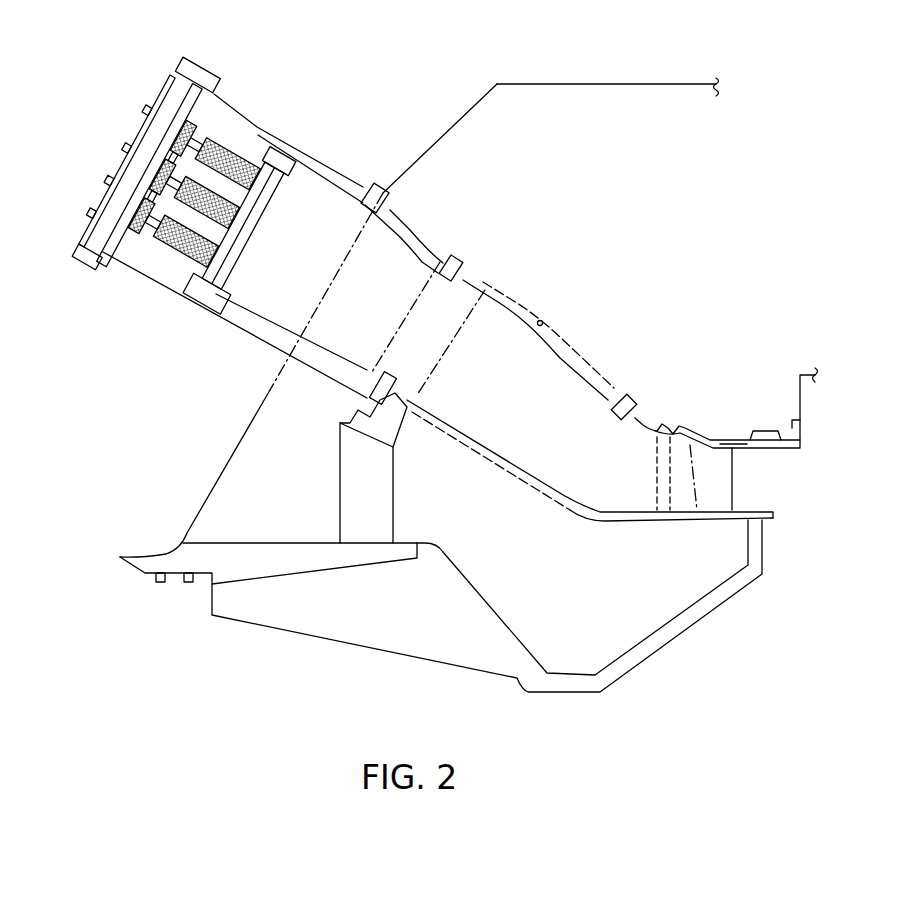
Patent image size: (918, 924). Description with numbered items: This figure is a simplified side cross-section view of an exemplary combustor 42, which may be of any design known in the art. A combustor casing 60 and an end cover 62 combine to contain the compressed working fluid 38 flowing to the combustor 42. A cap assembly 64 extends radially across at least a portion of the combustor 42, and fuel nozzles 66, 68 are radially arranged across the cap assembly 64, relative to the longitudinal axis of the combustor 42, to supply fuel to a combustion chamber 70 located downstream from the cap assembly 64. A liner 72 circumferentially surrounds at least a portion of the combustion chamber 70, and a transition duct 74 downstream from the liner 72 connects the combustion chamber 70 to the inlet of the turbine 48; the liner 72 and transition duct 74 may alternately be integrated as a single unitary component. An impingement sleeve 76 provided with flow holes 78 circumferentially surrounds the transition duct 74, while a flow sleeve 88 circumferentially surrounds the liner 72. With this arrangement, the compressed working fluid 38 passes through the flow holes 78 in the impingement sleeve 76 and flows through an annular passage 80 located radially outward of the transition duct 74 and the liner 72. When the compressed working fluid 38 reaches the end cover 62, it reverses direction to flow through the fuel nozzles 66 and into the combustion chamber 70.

The compressed working fluid 38 is at (598, 365).
The combustor 42 is at (350, 58).
The turbine 48 is at (778, 486).
The combustor casing 60 is at (330, 175).
The end cover 62 is at (95, 208).
The cap assembly 64 is at (153, 285).
The fuel nozzle 66 is at (228, 136).
The fuel nozzle 68 is at (242, 160).
The combustion chamber 70 is at (300, 265).
The liner 72 is at (388, 236).
The transition duct 74 is at (573, 514).
The impingement sleeve 76 is at (521, 298).
The flow holes 78 is at (477, 273).
The annular passage 80 is at (546, 322).
The flow sleeve 88 is at (425, 253).